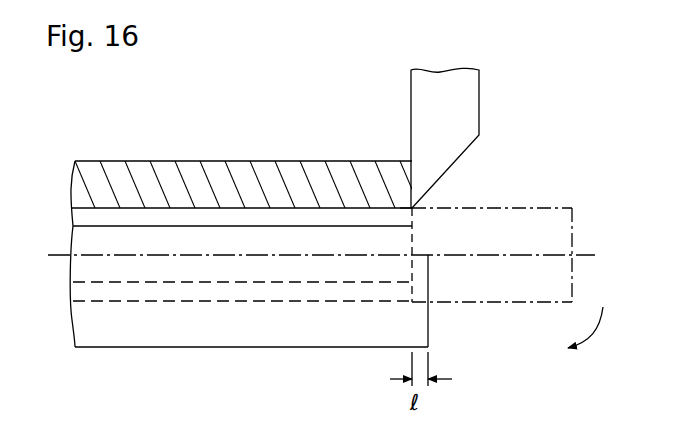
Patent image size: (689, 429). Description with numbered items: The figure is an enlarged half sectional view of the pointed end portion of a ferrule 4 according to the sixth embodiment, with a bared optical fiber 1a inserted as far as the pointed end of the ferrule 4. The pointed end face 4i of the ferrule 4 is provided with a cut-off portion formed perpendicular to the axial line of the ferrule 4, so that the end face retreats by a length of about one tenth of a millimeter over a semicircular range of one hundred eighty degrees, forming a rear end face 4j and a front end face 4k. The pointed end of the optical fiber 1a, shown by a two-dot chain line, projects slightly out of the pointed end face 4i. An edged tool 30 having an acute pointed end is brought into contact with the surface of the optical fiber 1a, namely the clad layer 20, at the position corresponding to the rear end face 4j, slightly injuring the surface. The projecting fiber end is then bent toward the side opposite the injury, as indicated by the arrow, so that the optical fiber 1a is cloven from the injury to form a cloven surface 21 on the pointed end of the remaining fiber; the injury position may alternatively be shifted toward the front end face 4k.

The optical fiber 1a is at (167, 206).
The ferrule 4 is at (245, 172).
The clad layer 20 is at (302, 218).
The cloven surface 21 is at (413, 273).
The edged tool 30 is at (472, 105).
The pointed end face 4i is at (540, 198).
The rear end face 4j is at (411, 170).
The front end face 4k is at (428, 325).